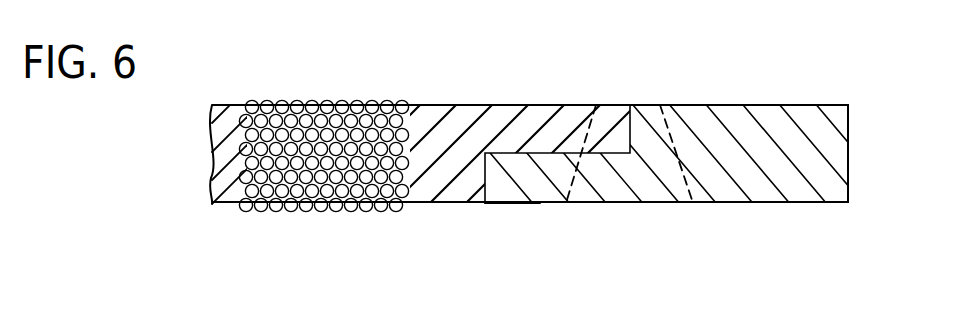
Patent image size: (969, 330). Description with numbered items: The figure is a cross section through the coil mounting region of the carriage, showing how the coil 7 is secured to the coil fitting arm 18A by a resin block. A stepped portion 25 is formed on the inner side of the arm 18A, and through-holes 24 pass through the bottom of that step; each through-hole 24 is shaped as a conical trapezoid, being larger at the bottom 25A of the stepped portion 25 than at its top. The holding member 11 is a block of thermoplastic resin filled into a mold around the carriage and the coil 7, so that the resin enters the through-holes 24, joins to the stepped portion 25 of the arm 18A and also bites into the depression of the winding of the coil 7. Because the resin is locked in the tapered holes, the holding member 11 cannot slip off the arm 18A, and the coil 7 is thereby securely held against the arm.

The coil 7 is at (313, 188).
The holding member 11 is at (538, 110).
The coil fitting arm 18A is at (722, 105).
The through-hole 24 is at (675, 203).
The stepped portion 25 is at (541, 187).
The bottom of stepped portion 25A is at (513, 205).